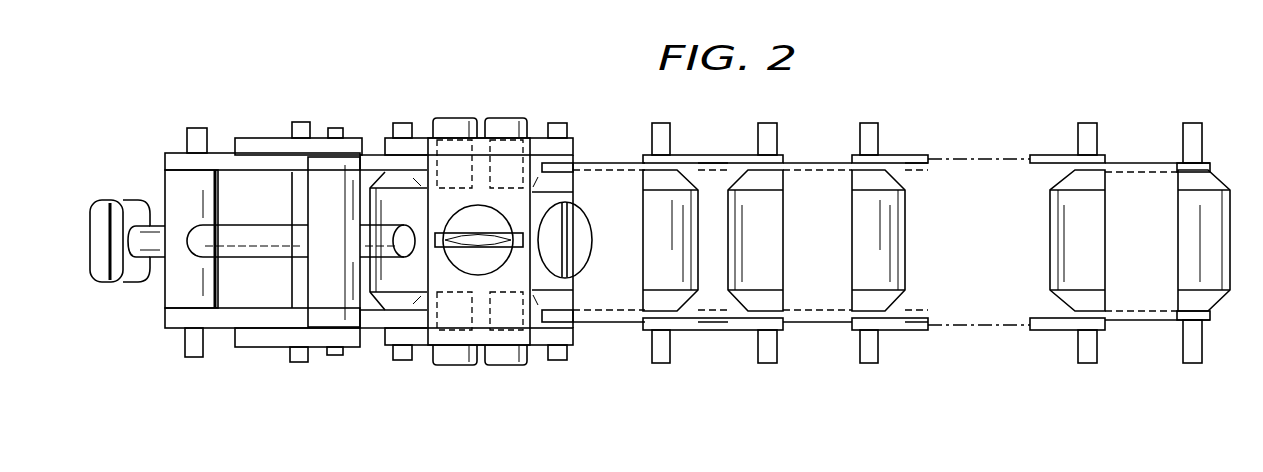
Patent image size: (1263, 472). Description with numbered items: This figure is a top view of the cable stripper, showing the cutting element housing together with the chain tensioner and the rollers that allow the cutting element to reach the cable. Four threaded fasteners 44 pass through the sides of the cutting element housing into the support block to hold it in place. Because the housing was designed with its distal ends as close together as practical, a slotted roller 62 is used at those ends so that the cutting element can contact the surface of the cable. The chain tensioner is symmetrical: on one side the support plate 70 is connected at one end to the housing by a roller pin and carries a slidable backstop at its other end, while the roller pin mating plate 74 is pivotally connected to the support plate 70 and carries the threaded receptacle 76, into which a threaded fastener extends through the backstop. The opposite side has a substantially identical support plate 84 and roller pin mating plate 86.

The threaded fasteners 44 is at (470, 363).
The slotted roller 62 is at (420, 232).
The support plate 70 is at (172, 320).
The roller pin mating plate 74 is at (317, 335).
The threaded receptacle 76 is at (298, 320).
The support plate 84 is at (177, 162).
The roller pin mating plate 86 is at (267, 143).